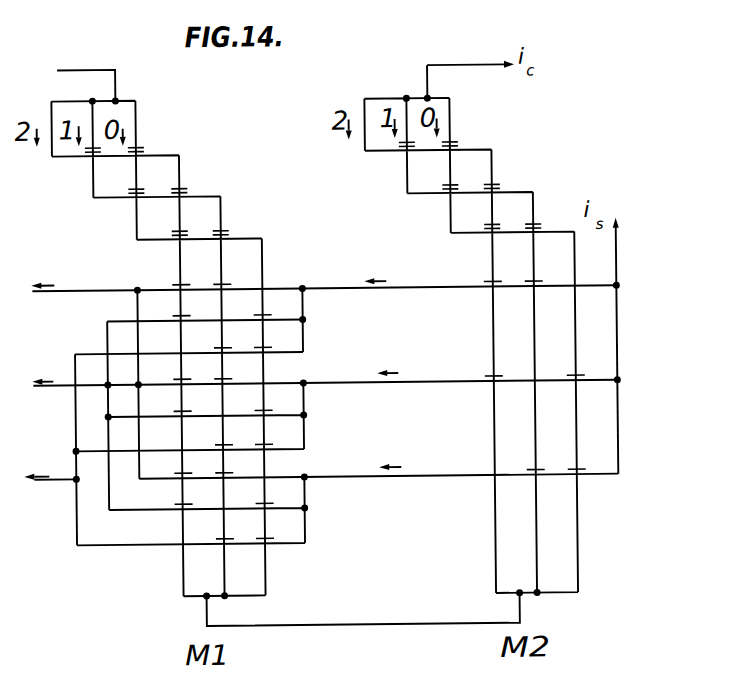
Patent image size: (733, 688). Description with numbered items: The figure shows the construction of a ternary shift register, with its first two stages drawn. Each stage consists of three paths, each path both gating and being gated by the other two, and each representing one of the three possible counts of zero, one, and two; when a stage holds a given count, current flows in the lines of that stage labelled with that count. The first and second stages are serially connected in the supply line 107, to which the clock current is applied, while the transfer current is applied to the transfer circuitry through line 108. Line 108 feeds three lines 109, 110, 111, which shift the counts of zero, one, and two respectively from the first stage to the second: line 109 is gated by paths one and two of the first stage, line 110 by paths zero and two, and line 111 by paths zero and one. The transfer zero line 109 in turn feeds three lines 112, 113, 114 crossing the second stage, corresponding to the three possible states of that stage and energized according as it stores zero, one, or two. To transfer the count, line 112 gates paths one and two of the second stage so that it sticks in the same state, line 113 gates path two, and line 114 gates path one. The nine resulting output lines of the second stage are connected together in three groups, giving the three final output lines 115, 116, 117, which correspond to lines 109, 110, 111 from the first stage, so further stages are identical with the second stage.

The supply line 107 is at (481, 67).
The transfer current line 108 is at (621, 242).
The transfer "0" line 109 is at (410, 293).
The transfer "1" line 110 is at (468, 382).
The transfer "2" line 111 is at (459, 478).
The input line crossing stage M2 112 is at (290, 286).
The input line crossing stage M2 113 is at (305, 317).
The input line crossing stage M2 114 is at (303, 352).
The final output line from M2 115 is at (63, 294).
The final output line from M2 116 is at (47, 389).
The final output line from M2 117 is at (48, 484).